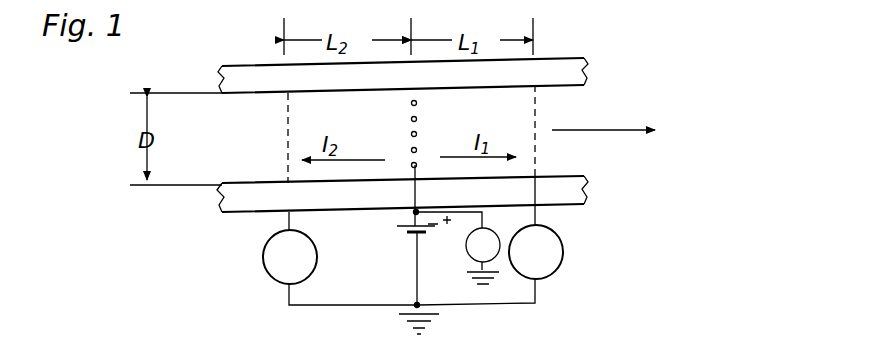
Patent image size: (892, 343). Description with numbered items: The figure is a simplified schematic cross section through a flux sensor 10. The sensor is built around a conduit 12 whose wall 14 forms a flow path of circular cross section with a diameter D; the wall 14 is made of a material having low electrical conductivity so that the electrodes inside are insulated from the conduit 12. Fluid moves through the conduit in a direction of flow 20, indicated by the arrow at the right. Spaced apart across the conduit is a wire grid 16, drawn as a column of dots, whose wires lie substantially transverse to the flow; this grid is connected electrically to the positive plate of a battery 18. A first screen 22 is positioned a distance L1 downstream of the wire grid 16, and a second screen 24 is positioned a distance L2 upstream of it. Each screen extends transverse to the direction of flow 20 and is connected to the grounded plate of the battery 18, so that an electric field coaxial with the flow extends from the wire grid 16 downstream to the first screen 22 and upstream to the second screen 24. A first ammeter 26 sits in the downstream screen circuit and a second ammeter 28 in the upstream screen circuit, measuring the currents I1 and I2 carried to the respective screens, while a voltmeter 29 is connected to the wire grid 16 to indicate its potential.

The flux sensor 10 is at (207, 233).
The conduit 12 is at (330, 121).
The wall 14 is at (478, 90).
The wire grid 16 is at (408, 132).
The battery 18 is at (400, 226).
The direction of flow 20 is at (615, 130).
The first screen 22 is at (540, 119).
The second screen 24 is at (285, 143).
The first ammeter 26 is at (563, 258).
The second ammeter 28 is at (271, 274).
The voltmeter 29 is at (496, 240).